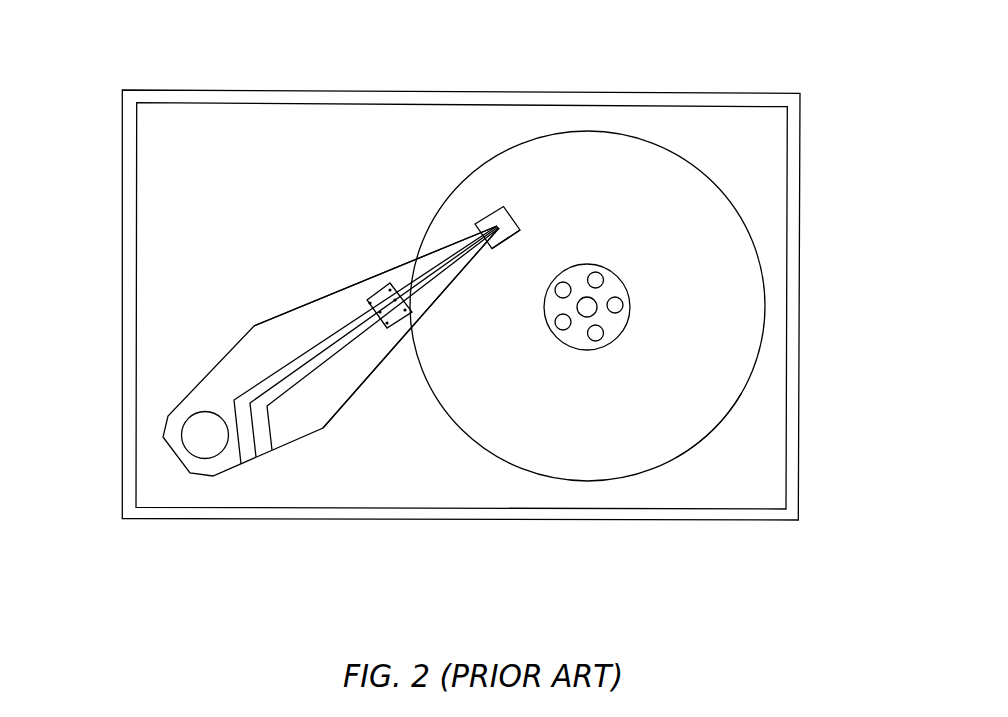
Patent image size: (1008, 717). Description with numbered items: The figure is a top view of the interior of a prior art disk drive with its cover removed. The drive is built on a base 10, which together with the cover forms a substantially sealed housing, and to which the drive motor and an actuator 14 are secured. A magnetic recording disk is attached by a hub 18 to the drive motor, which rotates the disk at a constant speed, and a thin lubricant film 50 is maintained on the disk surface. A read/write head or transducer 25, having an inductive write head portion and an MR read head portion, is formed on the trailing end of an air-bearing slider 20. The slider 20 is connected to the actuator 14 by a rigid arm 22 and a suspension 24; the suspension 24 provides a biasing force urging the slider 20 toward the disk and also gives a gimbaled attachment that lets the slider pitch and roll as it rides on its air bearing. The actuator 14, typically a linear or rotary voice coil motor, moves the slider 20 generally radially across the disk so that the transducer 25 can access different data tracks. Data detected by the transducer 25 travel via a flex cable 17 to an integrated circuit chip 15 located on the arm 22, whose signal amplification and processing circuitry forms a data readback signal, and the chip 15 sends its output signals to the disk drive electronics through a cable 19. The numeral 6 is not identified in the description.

The base 10 is at (799, 161).
The thin lubricant film 50 is at (618, 150).
The disk recording surface 6 is at (733, 405).
The hub 18 is at (620, 285).
The rigid arm 22 is at (217, 373).
The actuator 14 is at (198, 452).
The cable 19 is at (276, 390).
The integrated circuit chip 15 is at (385, 298).
The flex cable 17 is at (408, 280).
The air-bearing slider 20 is at (501, 213).
The suspension 24 is at (442, 300).
The read/write head or transducer 25 is at (493, 248).